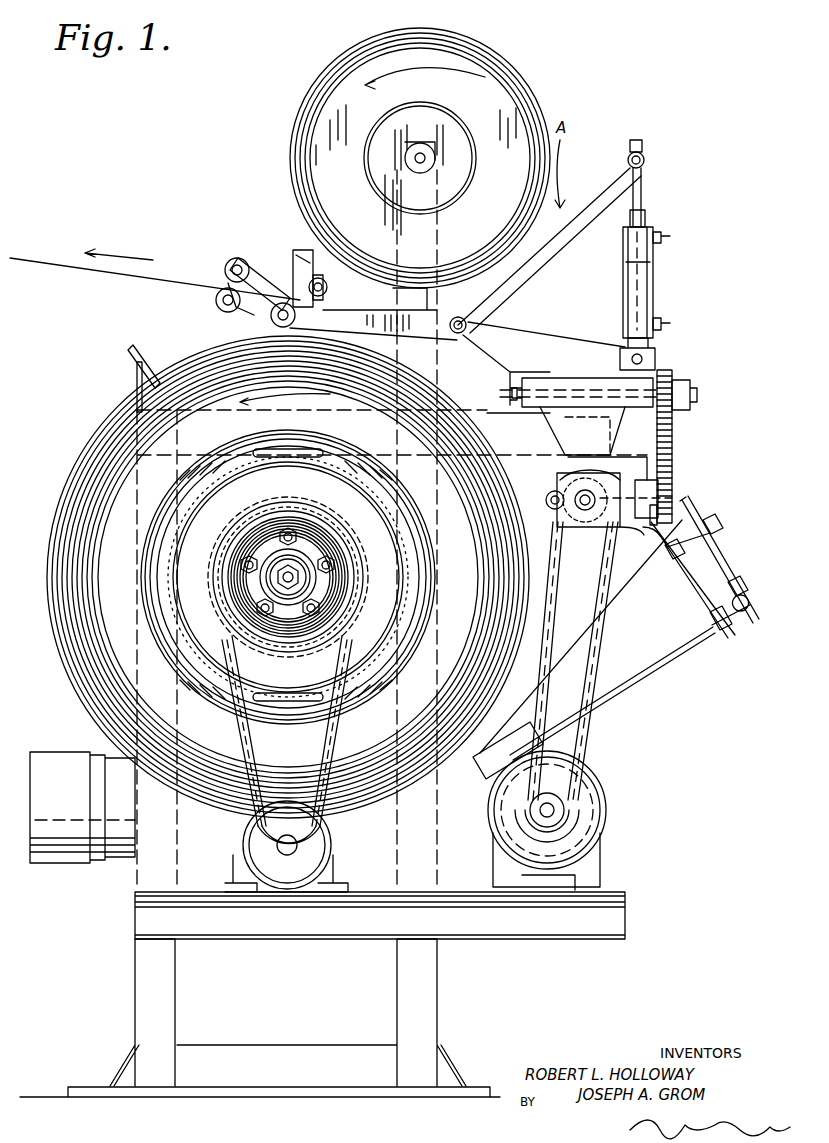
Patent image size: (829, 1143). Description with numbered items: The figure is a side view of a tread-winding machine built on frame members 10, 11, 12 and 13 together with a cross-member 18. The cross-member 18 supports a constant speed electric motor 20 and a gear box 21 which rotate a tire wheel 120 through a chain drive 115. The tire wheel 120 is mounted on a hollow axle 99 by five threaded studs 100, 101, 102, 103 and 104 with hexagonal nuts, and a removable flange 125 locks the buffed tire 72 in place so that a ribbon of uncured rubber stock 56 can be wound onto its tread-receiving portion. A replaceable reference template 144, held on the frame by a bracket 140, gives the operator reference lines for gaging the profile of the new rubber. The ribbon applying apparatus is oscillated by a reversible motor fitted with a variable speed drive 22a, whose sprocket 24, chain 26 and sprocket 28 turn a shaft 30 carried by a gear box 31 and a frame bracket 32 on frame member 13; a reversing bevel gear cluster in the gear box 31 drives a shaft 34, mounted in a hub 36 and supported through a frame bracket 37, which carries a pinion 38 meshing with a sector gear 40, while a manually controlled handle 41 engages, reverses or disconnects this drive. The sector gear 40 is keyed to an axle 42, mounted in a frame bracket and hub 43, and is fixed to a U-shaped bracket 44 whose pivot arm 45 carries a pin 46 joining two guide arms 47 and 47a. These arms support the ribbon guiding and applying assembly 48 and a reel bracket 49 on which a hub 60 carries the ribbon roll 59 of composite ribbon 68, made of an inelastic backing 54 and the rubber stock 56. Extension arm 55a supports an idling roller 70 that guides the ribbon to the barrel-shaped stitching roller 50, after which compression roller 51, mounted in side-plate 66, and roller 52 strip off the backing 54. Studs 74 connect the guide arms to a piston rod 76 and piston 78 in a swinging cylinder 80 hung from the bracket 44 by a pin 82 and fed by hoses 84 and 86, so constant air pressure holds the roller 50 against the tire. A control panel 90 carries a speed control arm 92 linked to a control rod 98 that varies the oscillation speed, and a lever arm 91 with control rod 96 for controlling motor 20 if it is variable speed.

The frame member 10 is at (74, 1087).
The frame member 11 is at (430, 983).
The frame member 12 is at (170, 980).
The frame member 13 is at (484, 415).
The cross-member 18 is at (612, 892).
The constant speed electric motor 20 is at (67, 753).
The gear box 21 is at (332, 865).
The variable speed drive 22a is at (588, 792).
The sprocket 24 is at (566, 810).
The chain 26 is at (582, 730).
The sprocket 28 is at (674, 460).
The shaft 30 is at (560, 516).
The gear box 31 is at (554, 490).
The frame bracket 32 is at (566, 470).
The shaft 34 is at (692, 512).
The hub 36 is at (623, 528).
The frame bracket 37 is at (628, 460).
The pinion 38 is at (660, 503).
The sector gear 40 is at (674, 428).
The manually controlled handle 41 is at (546, 497).
The axle 42 is at (692, 386).
The frame bracket and hub 43 is at (638, 387).
The U-shaped bracket 44 is at (546, 374).
The pivot arm 45 is at (492, 352).
The pin 46 is at (456, 333).
The guide arm 47 is at (605, 185).
The guide arm 47a is at (370, 292).
The ribbon guiding and applying assembly 48 is at (253, 238).
The reel bracket 49 is at (420, 236).
The stitching roller 50 is at (288, 302).
The compression roller 51 is at (224, 262).
The backing roller 52 is at (214, 296).
The inelastic backing 54 is at (70, 278).
The extension arm 55a is at (313, 265).
The ribbon of uncured rubber stock 56 is at (97, 470).
The ribbon roll 59 is at (493, 64).
The hub 60 is at (430, 158).
The side-plate 66 is at (253, 282).
The composite ribbon 68 is at (289, 232).
The idling roller 70 is at (328, 283).
The tire 72 is at (100, 536).
The stud 74 is at (646, 152).
The piston rod 76 is at (646, 181).
The piston 78 is at (623, 258).
The swinging cylinder 80 is at (628, 281).
The pin 82 is at (658, 355).
The hose 84 is at (662, 320).
The hose 86 is at (665, 236).
The control panel 90 is at (713, 549).
The manually operated lever arm 91 is at (714, 521).
The speed control arm 92 is at (738, 586).
The control rod 96 is at (622, 582).
The control rod 98 is at (662, 646).
The axle 99 is at (282, 583).
The threaded stud 100 is at (287, 577).
The threaded stud 101 is at (324, 587).
The threaded stud 102 is at (335, 566).
The threaded stud 103 is at (292, 537).
The threaded stud 104 is at (253, 560).
The chain drive 115 is at (245, 722).
The tire wheel 120 is at (288, 557).
The removable flange 125 is at (346, 462).
The bracket 140 is at (136, 374).
The reference template 144 is at (146, 351).